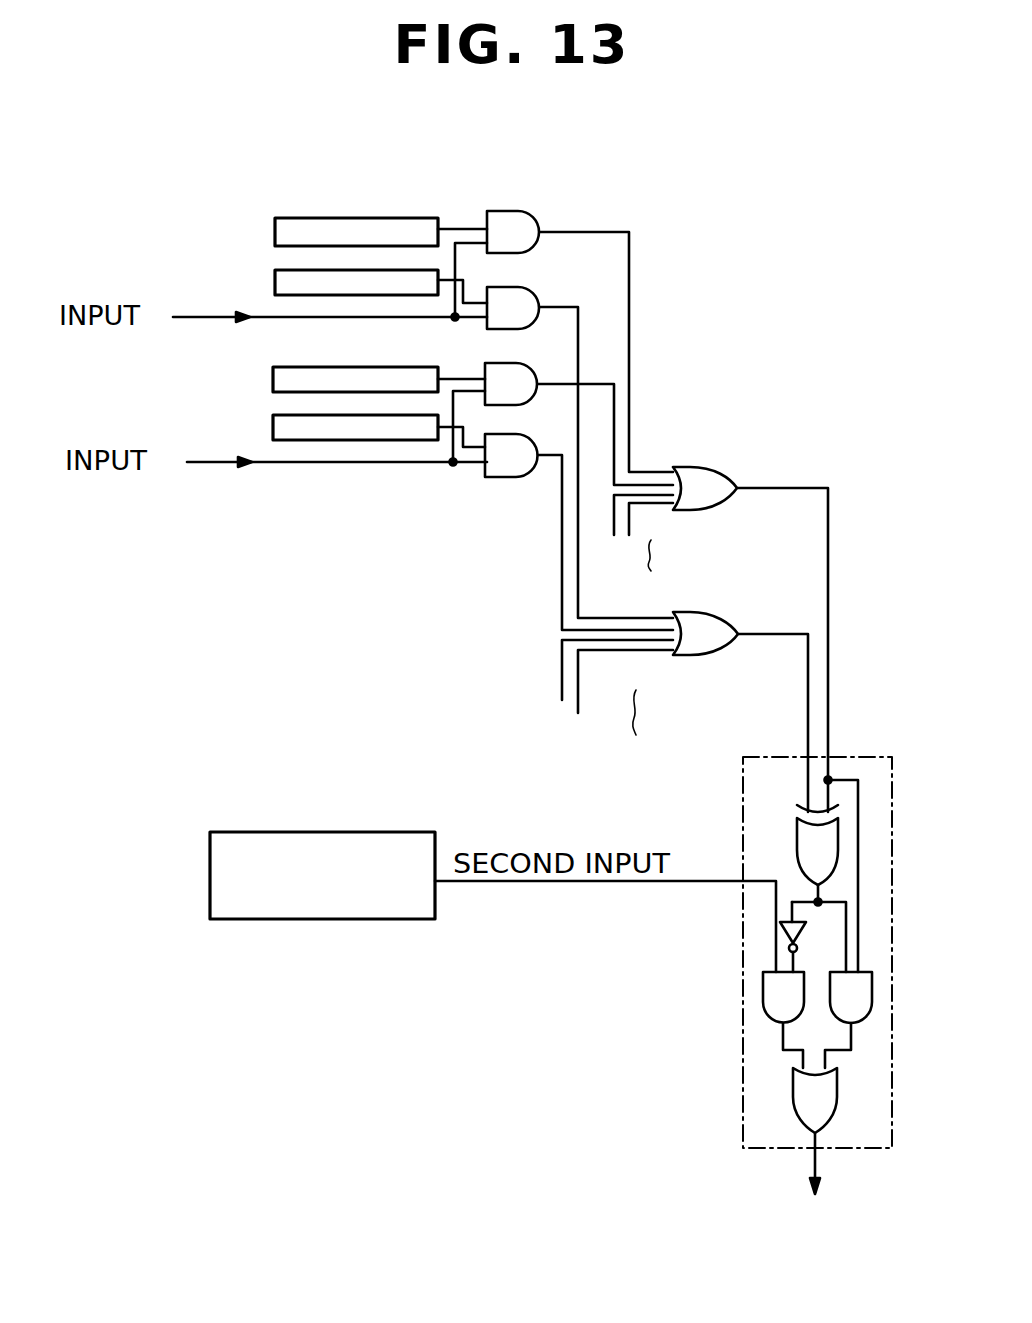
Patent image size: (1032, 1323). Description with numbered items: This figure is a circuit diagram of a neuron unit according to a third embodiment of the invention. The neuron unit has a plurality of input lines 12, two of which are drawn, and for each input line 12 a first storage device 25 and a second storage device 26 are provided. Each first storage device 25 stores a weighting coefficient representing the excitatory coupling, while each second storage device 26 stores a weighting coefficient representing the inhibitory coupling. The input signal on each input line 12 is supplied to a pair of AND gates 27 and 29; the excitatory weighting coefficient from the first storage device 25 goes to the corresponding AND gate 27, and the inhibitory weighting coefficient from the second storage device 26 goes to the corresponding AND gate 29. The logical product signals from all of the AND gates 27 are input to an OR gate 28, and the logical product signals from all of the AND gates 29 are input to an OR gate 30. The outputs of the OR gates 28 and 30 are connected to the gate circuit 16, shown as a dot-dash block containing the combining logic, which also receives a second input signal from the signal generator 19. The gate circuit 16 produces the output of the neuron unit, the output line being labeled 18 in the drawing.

The input line 12 is at (262, 314).
The gate circuit 16 is at (743, 957).
The output 18 is at (814, 1172).
The signal generator 19 is at (336, 921).
The first storage device 25 is at (313, 217).
The second storage device 26 is at (390, 271).
The AND gate 27 is at (505, 210).
The OR gate 28 is at (697, 467).
The AND gate 29 is at (502, 287).
The OR gate 30 is at (712, 612).